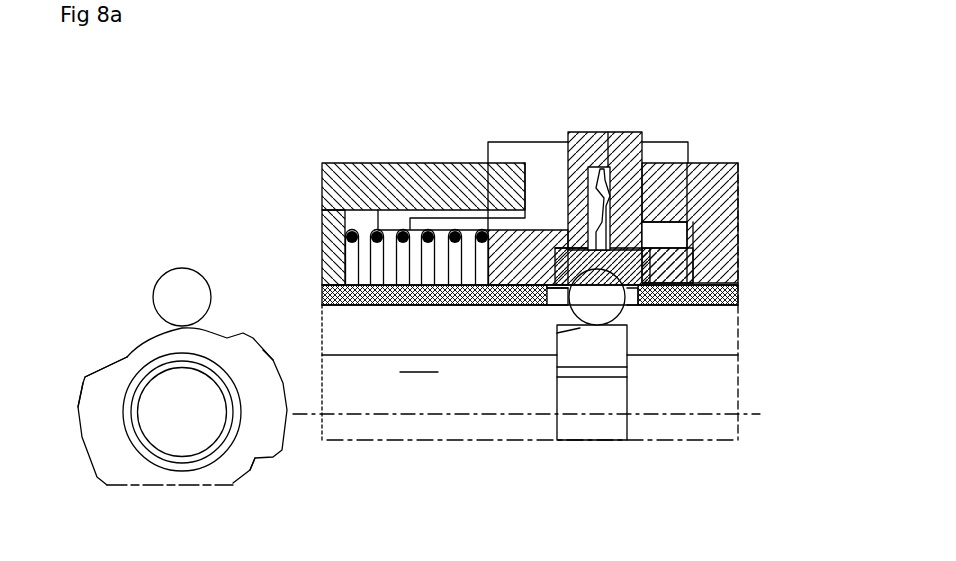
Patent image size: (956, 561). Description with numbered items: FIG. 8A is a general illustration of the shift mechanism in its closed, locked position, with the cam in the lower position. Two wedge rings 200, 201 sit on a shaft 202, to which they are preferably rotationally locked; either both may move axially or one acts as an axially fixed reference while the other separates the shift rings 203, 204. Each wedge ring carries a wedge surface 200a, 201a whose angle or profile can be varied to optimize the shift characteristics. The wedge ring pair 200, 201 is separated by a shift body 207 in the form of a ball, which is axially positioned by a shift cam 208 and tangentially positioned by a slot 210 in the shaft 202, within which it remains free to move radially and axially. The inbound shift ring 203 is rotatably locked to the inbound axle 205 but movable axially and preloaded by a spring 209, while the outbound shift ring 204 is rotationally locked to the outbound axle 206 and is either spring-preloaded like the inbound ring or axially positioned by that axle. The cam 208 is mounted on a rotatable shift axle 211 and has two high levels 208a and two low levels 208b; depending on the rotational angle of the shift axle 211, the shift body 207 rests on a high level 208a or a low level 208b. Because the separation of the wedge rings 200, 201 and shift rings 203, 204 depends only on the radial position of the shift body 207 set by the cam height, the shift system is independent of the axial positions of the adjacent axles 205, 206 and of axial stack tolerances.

The wedge ring 200 is at (553, 230).
The wedge surface 200a is at (562, 247).
The wedge ring 201 is at (640, 250).
The wedge surface 201a is at (700, 270).
The shaft 202 is at (713, 302).
The inbound shift ring 203 is at (585, 137).
The outbound shift ring 204 is at (627, 147).
The inbound axle 205 is at (407, 180).
The outbound axle 206 is at (738, 180).
The shift body 207 is at (190, 292).
The shift cam 208 is at (125, 367).
The high level 208a is at (263, 350).
The low level 208b is at (127, 357).
The spring 209 is at (340, 170).
The slot 210 is at (558, 298).
The shift axle 211 is at (438, 372).